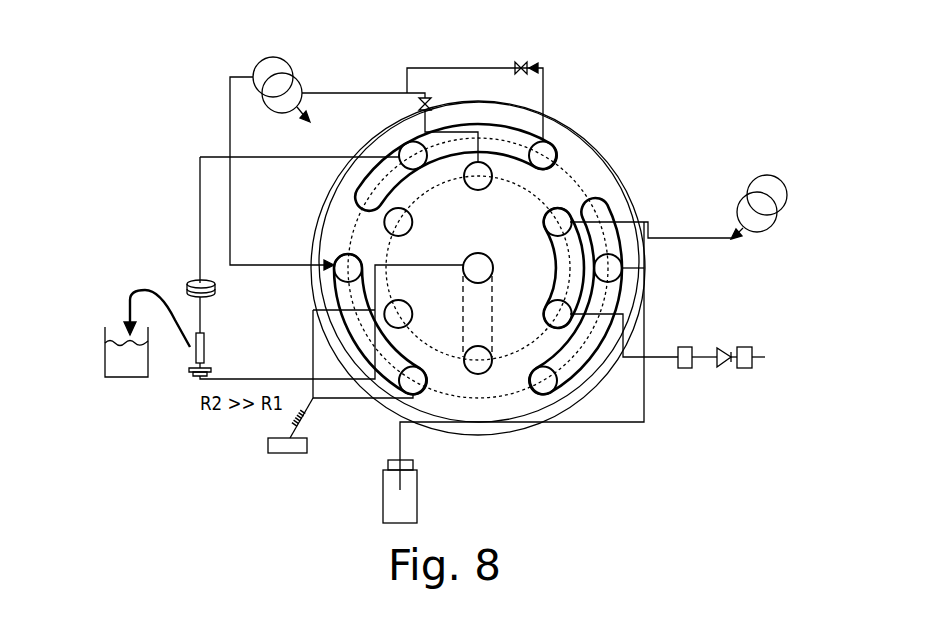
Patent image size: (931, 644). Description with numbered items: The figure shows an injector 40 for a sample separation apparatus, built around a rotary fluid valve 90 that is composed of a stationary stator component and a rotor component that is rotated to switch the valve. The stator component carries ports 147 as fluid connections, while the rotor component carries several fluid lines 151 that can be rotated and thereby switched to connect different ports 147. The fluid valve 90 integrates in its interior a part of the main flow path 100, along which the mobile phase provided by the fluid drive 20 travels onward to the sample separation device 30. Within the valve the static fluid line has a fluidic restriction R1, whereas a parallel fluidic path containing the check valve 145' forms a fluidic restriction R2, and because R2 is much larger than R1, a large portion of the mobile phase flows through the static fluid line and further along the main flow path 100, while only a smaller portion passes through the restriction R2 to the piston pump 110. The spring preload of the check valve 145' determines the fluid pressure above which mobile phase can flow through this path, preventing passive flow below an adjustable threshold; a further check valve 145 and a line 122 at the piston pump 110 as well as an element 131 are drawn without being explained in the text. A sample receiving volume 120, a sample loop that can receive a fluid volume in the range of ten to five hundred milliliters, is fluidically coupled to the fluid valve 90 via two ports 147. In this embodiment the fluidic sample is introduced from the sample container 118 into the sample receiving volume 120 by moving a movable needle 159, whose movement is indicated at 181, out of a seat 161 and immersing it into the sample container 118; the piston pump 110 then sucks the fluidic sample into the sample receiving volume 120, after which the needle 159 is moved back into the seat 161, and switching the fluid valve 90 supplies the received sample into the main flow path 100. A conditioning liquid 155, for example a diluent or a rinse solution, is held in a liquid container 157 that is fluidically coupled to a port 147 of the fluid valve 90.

The fluid drive 20 is at (763, 176).
The sample separation device 30 is at (745, 347).
The injector 40 is at (216, 60).
The rotary fluid valve 90 is at (393, 412).
The main flow path 100 is at (653, 353).
The piston pump 110 is at (270, 57).
The sample container 118 is at (112, 378).
The sample receiving volume 120 is at (194, 283).
The pump inlet line 122 is at (252, 100).
The heater 131 is at (268, 446).
The check valve 145 is at (475, 86).
The check valve 145' is at (452, 119).
The ports 147 is at (340, 197).
The fluid lines 151 is at (470, 325).
The conditioning liquid 155 is at (405, 508).
The liquid container 157 is at (417, 470).
The needle 159 is at (206, 345).
The seat 161 is at (190, 377).
The needle movement 181 is at (146, 291).
The fluidic restriction R1 is at (478, 268).
The fluidic restriction R2 is at (478, 250).